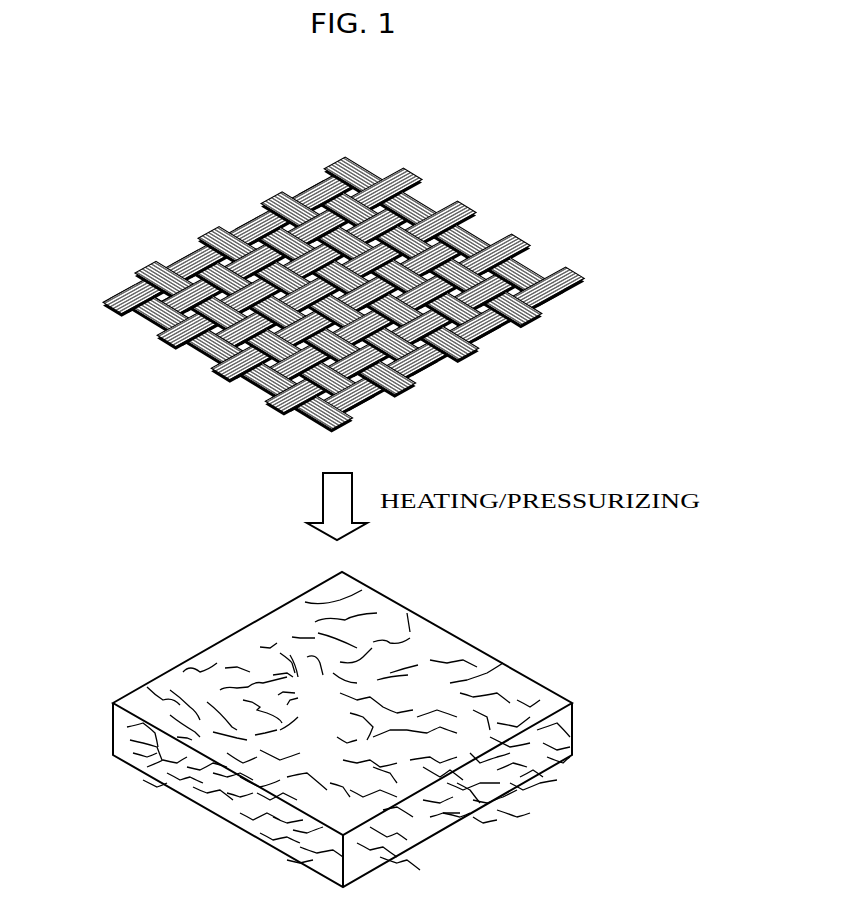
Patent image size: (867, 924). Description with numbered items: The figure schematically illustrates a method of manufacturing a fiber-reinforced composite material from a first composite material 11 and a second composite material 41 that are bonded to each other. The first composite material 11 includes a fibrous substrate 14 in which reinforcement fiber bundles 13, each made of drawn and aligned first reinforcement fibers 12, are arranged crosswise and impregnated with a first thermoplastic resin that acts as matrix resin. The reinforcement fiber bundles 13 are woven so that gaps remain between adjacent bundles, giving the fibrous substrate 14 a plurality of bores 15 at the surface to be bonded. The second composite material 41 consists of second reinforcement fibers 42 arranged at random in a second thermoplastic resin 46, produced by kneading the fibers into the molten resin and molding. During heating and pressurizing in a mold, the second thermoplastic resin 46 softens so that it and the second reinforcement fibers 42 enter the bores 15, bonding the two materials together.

The first composite material 11 is at (344, 278).
The first reinforcement fibers 12 is at (344, 273).
The reinforcement fiber bundles 13 is at (563, 270).
The fibrous substrate 14 is at (237, 240).
The bores 15 is at (486, 326).
The second composite material 41 is at (342, 724).
The second reinforcement fibers 42 is at (525, 770).
The second thermoplastic resin 46 is at (447, 642).